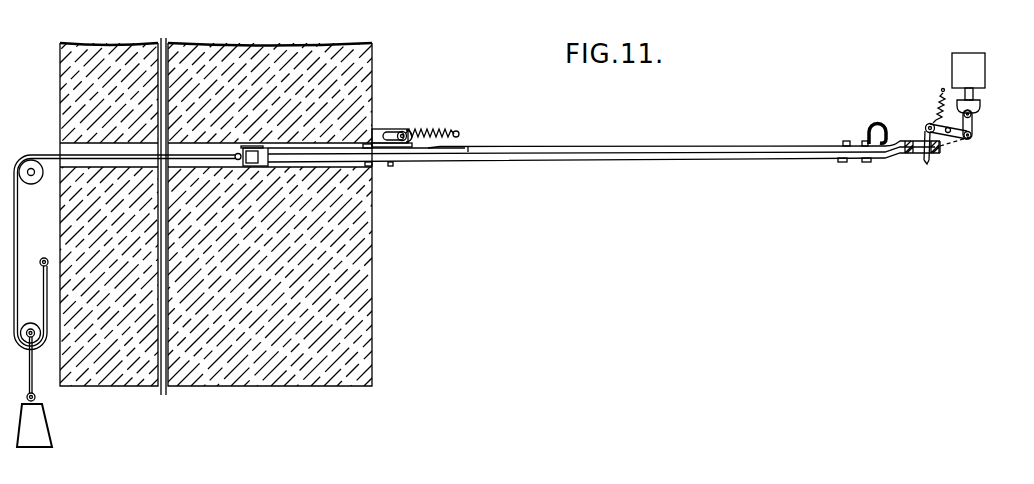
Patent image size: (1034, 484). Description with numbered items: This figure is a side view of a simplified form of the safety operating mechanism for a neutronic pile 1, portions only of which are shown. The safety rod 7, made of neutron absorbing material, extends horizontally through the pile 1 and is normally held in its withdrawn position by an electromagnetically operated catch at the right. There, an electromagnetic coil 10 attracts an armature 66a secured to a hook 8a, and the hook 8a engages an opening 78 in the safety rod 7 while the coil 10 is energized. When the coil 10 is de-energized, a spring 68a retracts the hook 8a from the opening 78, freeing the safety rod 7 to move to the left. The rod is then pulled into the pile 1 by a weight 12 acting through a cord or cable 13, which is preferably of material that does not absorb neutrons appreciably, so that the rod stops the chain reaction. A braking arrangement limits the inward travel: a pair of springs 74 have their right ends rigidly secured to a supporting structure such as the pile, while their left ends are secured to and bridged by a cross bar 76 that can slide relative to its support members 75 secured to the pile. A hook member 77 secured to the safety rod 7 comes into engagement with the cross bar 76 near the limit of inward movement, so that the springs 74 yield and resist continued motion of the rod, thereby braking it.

The pile 1 is at (373, 46).
The safety rod 7 is at (541, 147).
The hook 8a is at (926, 126).
The electromagnetic coil 10 is at (975, 70).
The weight 12 is at (48, 430).
The cord or cable 13 is at (55, 153).
The armature 66a is at (975, 117).
The spring 68a is at (943, 88).
The springs 74 is at (428, 128).
The support members 75 is at (386, 128).
The cross bar 76 is at (402, 131).
The hook member 77 is at (878, 122).
The opening 78 is at (912, 160).